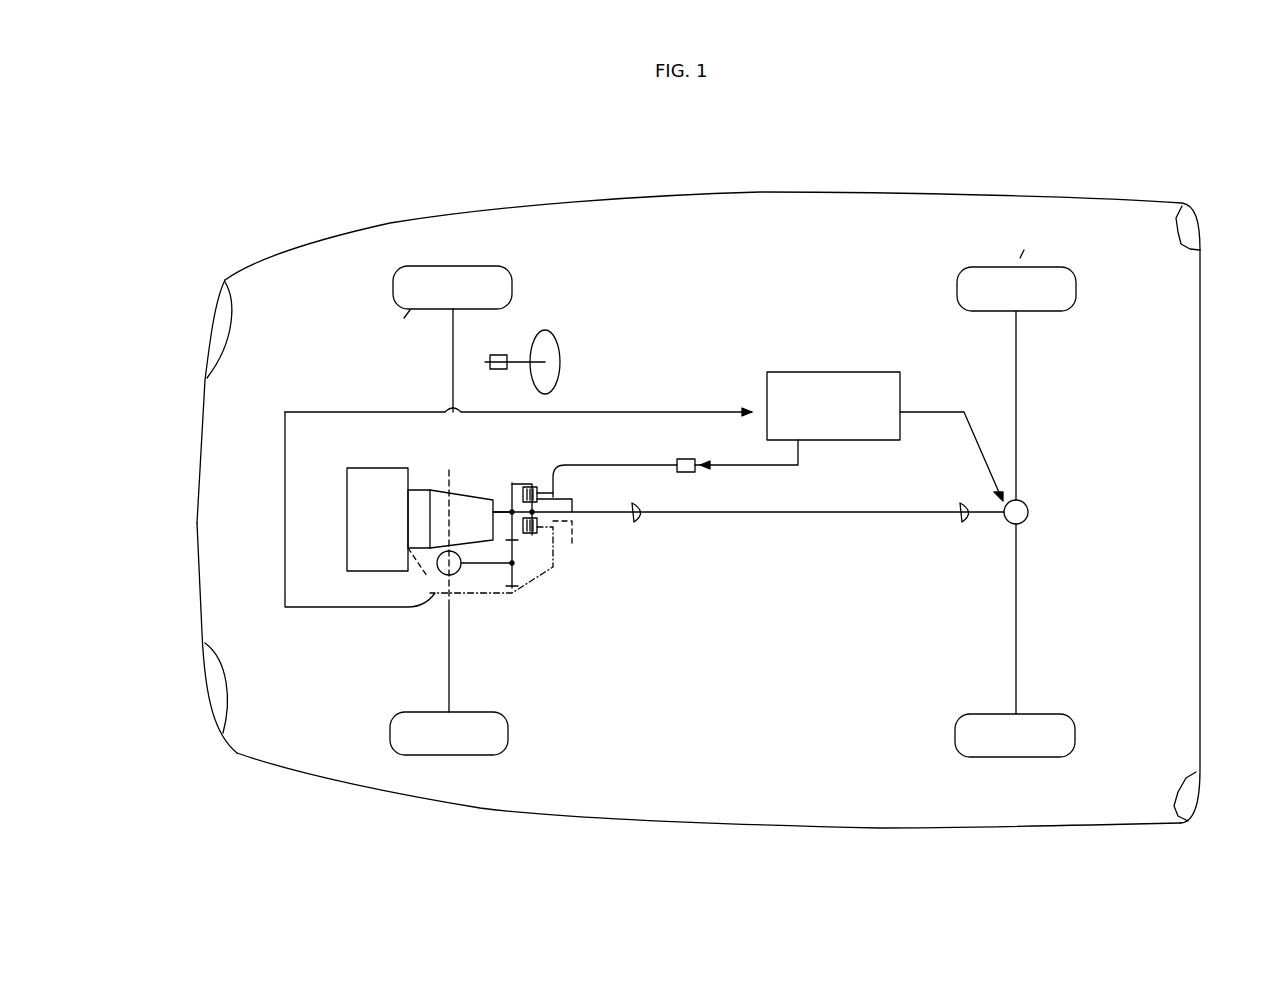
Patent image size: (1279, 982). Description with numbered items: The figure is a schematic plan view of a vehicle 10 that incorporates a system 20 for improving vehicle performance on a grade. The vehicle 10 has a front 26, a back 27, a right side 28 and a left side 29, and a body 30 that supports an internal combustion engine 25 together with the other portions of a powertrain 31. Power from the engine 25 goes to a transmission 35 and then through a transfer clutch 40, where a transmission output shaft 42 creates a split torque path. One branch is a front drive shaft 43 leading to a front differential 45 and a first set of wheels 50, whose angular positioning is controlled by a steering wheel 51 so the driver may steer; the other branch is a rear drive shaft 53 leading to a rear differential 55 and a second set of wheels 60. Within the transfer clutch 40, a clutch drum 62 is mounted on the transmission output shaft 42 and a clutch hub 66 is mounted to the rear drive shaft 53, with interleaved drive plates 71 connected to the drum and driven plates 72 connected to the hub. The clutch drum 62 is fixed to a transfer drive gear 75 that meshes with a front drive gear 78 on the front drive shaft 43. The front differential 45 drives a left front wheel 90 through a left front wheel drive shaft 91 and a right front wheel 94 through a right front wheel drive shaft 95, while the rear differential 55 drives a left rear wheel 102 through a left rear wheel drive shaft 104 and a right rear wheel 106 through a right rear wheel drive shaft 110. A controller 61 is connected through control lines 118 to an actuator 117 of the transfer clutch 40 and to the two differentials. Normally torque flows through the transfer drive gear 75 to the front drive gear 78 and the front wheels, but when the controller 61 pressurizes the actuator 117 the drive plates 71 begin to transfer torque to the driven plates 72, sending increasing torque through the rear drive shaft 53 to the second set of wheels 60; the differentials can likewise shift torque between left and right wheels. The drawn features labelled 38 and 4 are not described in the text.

The vehicle 10 is at (895, 158).
The system for improving vehicle performance 20 is at (834, 360).
The internal combustion engine 25 is at (352, 578).
The front 26 is at (198, 433).
The back 27 is at (1200, 495).
The right side 28 is at (510, 200).
The left side 29 is at (540, 815).
The body 30 is at (200, 632).
The powertrain 31 is at (755, 518).
The transmission 35 is at (441, 482).
The valve 38 is at (990, 510).
The transfer clutch 40 is at (530, 550).
The transmission output shaft 42 is at (493, 512).
The front drive shaft 43 is at (478, 566).
The front differential 45 is at (442, 569).
The first set of wheels 50 is at (408, 311).
The steering wheel 51 is at (560, 362).
The rear drive shaft 53 is at (672, 514).
The rear differential 55 is at (1027, 503).
The second set of wheels 60 is at (1021, 258).
The controller 61 is at (796, 372).
The clutch drum 62 is at (543, 537).
The clutch hub 66 is at (512, 502).
The drive plates 71 is at (527, 486).
The driven plates 72 is at (540, 528).
The transfer drive gear 75 is at (510, 481).
The front drive gear 78 is at (515, 590).
The left front wheel 90 is at (393, 730).
The left front wheel drive shaft 91 is at (449, 668).
The right front wheel 94 is at (393, 280).
The right front wheel drive shaft 95 is at (453, 368).
The left rear wheel 102 is at (975, 760).
The left rear wheel drive shaft 104 is at (1017, 614).
The right rear wheel 106 is at (958, 275).
The right rear wheel drive shaft 110 is at (1017, 408).
The actuator 117 is at (547, 477).
The control lines 118 is at (590, 465).
The pump connection 4 is at (574, 518).